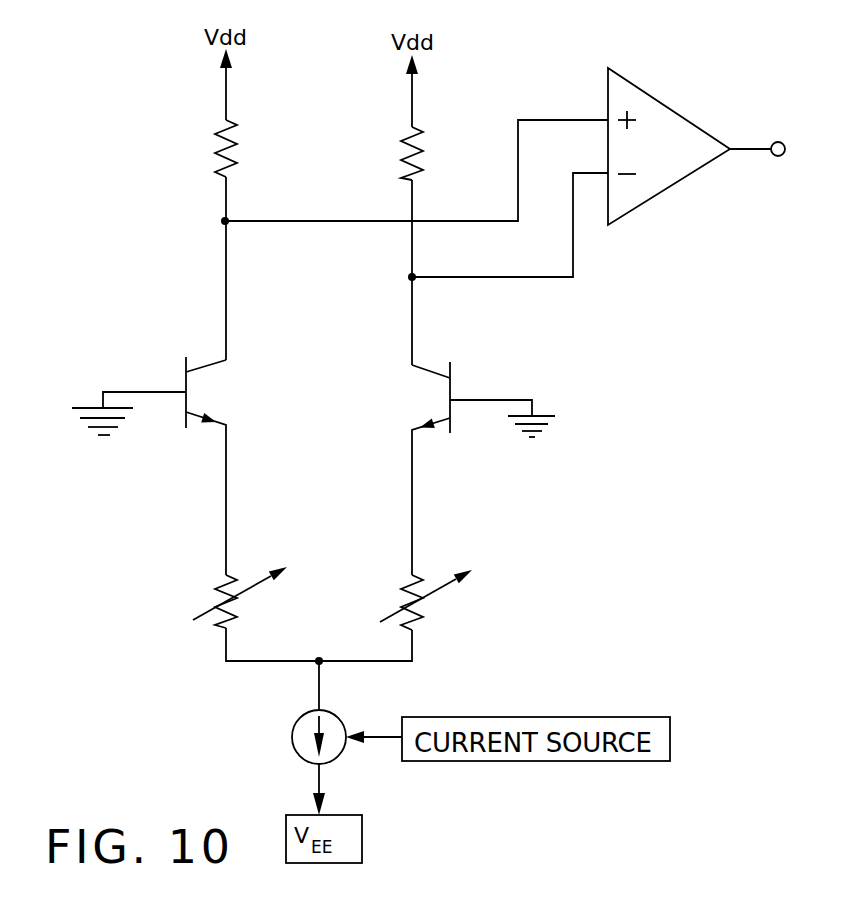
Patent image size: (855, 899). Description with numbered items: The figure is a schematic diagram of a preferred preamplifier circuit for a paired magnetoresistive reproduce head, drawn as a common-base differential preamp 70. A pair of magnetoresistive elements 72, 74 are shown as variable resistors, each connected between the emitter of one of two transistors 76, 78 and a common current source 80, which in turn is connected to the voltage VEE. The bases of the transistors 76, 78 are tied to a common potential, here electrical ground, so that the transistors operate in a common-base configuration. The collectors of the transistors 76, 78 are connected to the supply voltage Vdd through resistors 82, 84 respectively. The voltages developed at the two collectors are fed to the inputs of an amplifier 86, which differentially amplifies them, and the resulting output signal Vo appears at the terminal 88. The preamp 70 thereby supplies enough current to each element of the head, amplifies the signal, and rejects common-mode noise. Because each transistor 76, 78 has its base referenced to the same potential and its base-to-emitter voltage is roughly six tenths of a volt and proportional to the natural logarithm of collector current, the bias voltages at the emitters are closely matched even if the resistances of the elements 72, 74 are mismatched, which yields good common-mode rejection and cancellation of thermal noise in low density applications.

The common-base differential preamp 70 is at (94, 244).
The magnetoresistive element 72 is at (213, 621).
The magnetoresistive element 74 is at (420, 620).
The transistor 76 is at (150, 443).
The transistor 78 is at (488, 452).
The current source 80 is at (292, 737).
The resistor 82 is at (243, 136).
The resistor 84 is at (430, 140).
The amplifier 86 is at (645, 83).
The terminal 88 is at (775, 157).